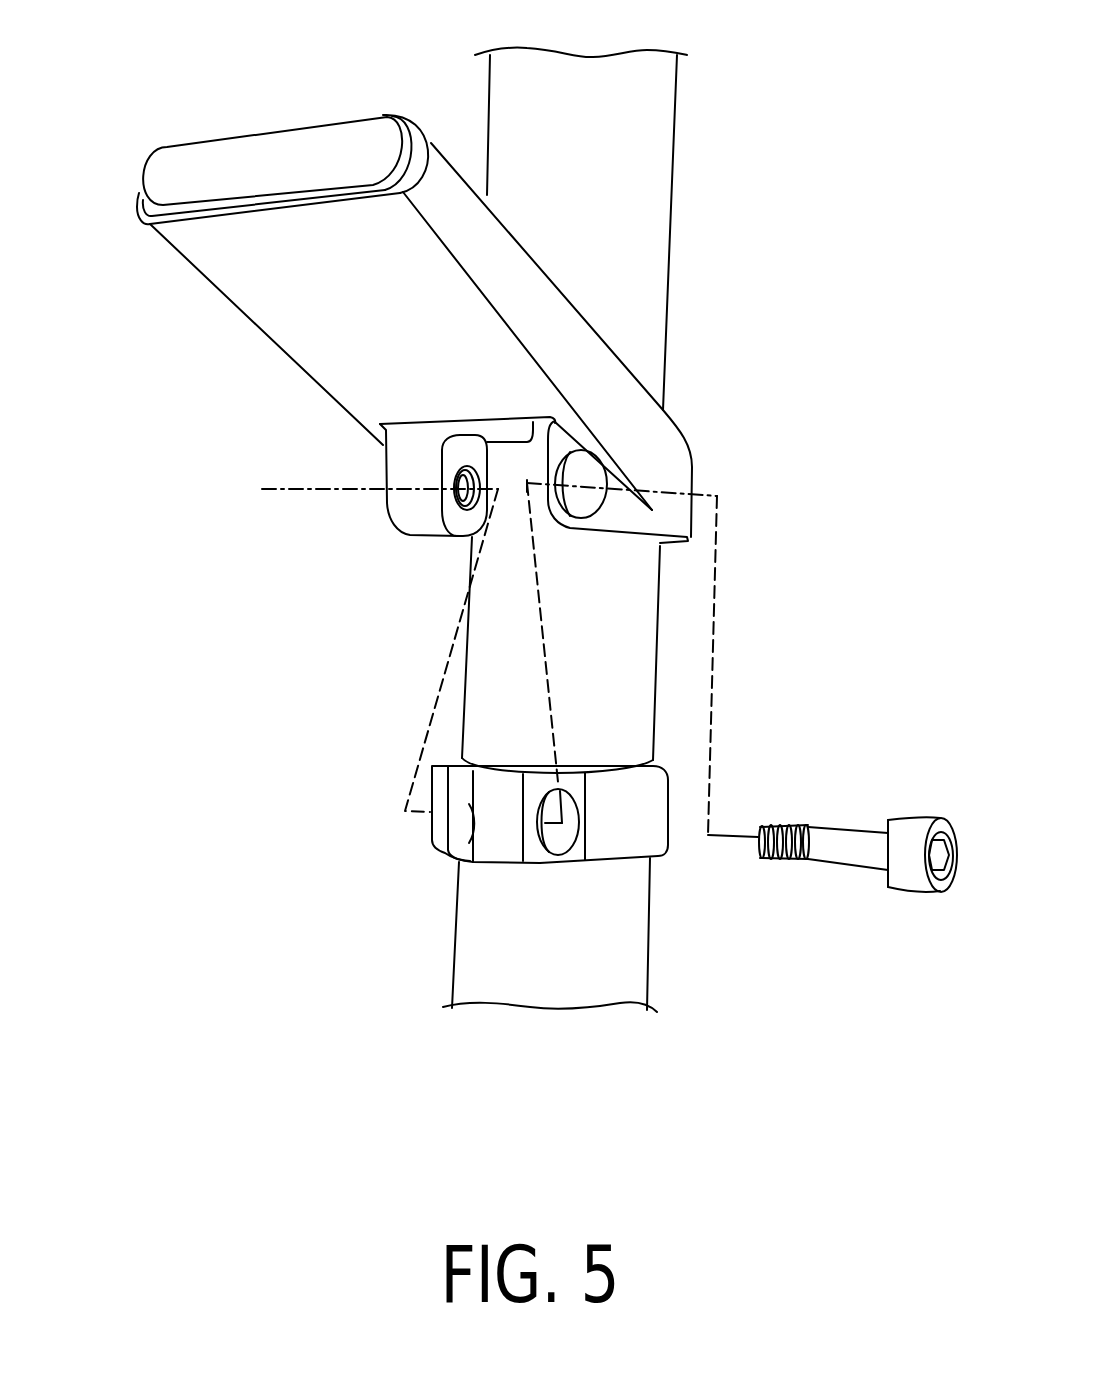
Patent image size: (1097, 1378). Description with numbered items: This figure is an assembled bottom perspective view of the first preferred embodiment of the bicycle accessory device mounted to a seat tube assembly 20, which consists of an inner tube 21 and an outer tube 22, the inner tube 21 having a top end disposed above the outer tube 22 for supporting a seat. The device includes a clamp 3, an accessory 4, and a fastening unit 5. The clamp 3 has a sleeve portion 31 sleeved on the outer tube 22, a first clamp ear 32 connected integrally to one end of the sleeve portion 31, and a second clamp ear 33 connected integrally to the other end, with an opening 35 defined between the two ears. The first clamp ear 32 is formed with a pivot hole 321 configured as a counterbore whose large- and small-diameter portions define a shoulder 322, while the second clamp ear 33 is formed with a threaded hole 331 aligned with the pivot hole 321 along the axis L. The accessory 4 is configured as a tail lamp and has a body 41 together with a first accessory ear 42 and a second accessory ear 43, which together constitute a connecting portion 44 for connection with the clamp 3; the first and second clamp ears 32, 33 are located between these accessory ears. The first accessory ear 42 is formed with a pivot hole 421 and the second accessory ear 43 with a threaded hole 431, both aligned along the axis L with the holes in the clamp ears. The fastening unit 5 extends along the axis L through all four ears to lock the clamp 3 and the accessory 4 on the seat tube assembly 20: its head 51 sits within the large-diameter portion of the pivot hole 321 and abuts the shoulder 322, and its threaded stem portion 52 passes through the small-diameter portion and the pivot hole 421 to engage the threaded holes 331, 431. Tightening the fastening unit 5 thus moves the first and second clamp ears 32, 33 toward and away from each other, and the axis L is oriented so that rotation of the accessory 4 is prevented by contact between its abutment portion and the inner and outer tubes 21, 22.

The clamp 3 is at (365, 770).
The accessory 4 is at (239, 110).
The fastening unit 5 is at (918, 797).
The seat tube assembly 20 is at (705, 76).
The inner tube 21 is at (657, 141).
The outer tube 22 is at (637, 987).
The sleeve portion 31 is at (653, 838).
The first clamp ear 32 is at (573, 860).
The second clamp ear 33 is at (440, 838).
The opening 35 is at (471, 850).
The body 41 is at (200, 256).
The first accessory ear 42 is at (556, 422).
The second accessory ear 43 is at (403, 508).
The connecting portion 44 is at (590, 545).
The head 51 is at (909, 880).
The threaded stem portion 52 is at (802, 862).
The pivot hole 321 is at (558, 850).
The shoulder 322 is at (552, 845).
The threaded hole 331 is at (466, 820).
The pivot hole 421 is at (578, 468).
The threaded hole 431 is at (462, 507).